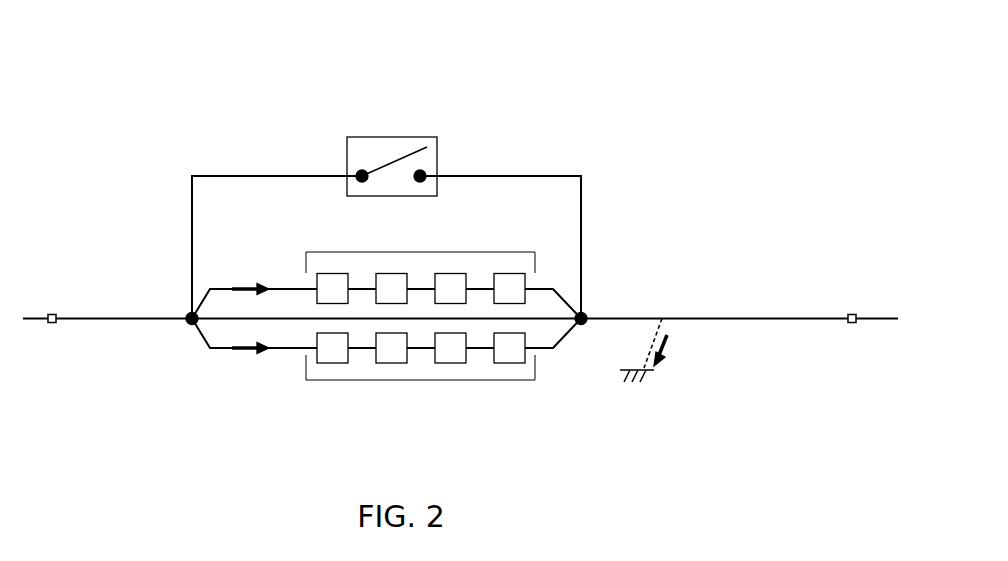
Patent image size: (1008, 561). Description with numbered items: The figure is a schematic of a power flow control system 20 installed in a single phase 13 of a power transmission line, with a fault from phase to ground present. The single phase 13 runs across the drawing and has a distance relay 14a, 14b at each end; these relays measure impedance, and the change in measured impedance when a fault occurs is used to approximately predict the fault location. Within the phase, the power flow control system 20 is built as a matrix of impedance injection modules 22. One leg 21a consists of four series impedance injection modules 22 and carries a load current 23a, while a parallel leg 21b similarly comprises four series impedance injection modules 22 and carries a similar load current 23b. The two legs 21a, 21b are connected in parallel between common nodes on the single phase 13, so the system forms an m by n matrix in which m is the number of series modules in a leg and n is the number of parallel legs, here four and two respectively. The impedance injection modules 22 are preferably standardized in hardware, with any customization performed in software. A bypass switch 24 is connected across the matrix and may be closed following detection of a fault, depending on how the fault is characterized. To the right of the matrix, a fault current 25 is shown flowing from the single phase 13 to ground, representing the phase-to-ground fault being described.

The power flow control system 20 is at (216, 72).
The single phase 13 is at (116, 314).
The distance relay 14a is at (56, 325).
The distance relay 14b is at (849, 325).
The leg 21a is at (420, 253).
The parallel leg 21b is at (480, 398).
The impedance injection module 22 is at (452, 273).
The load current 23a is at (386, 283).
The load current 23b is at (386, 331).
The bypass switch 24 is at (397, 137).
The fault current 25 is at (672, 352).